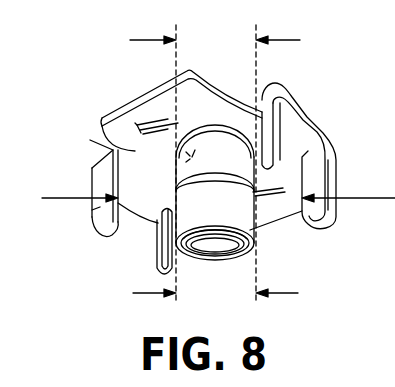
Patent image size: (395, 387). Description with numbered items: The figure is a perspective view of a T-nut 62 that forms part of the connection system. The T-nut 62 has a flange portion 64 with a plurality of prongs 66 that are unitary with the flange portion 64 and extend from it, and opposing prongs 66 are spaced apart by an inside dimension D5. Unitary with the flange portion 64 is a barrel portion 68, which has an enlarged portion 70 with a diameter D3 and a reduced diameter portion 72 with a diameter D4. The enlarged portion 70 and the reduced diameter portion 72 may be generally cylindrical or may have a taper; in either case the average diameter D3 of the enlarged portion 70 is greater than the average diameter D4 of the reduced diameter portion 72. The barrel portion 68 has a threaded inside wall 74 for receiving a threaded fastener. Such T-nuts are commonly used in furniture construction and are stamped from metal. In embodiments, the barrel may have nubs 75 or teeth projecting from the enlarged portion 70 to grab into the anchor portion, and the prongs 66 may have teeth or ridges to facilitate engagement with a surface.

The T-nut 62 is at (303, 111).
The flange portion 64 is at (92, 140).
The prongs 66 is at (93, 213).
The barrel portion 68 is at (160, 207).
The enlarged portion 70 is at (243, 170).
The reduced diameter portion 72 is at (242, 212).
The threaded inside wall 74 is at (228, 255).
The nubs 75 is at (170, 157).
The diameter of enlarged portion D3 is at (147, 37).
The diameter of reduced diameter portion D4 is at (283, 294).
The inside dimension of opposing prongs D5 is at (68, 198).